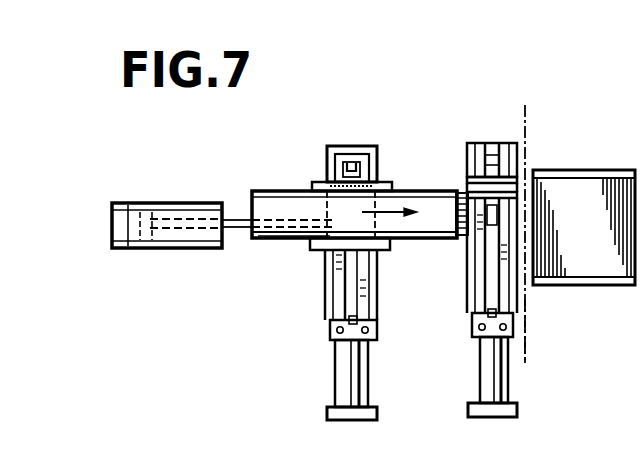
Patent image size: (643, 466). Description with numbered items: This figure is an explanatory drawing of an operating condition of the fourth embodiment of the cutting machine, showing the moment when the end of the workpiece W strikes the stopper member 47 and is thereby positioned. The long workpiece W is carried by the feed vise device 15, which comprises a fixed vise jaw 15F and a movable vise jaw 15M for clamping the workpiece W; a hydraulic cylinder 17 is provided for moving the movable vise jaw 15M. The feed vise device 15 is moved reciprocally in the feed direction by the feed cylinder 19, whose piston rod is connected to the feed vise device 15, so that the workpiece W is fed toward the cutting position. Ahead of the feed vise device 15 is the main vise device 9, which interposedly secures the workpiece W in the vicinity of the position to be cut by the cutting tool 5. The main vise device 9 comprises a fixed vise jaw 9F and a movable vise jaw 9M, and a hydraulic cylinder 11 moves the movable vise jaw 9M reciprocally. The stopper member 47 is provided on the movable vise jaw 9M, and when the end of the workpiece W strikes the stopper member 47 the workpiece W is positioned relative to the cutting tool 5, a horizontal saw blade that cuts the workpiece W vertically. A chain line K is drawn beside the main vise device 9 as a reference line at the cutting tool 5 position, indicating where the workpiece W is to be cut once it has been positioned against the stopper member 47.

The feed cylinder 19 is at (158, 250).
The feed vise device 15 is at (318, 177).
The workpiece W is at (267, 243).
The fixed vise jaw 15F is at (345, 146).
The movable vise jaw 15M is at (335, 262).
The hydraulic cylinder 17 is at (334, 372).
The stopper member 47 is at (463, 193).
The fixed vise jaw 9F is at (490, 143).
The movable vise jaw 9M is at (466, 235).
The hydraulic cylinder 11 is at (484, 373).
The reference line K is at (525, 219).
The cutting tool 5 is at (526, 355).
The main vise device 9 is at (528, 141).